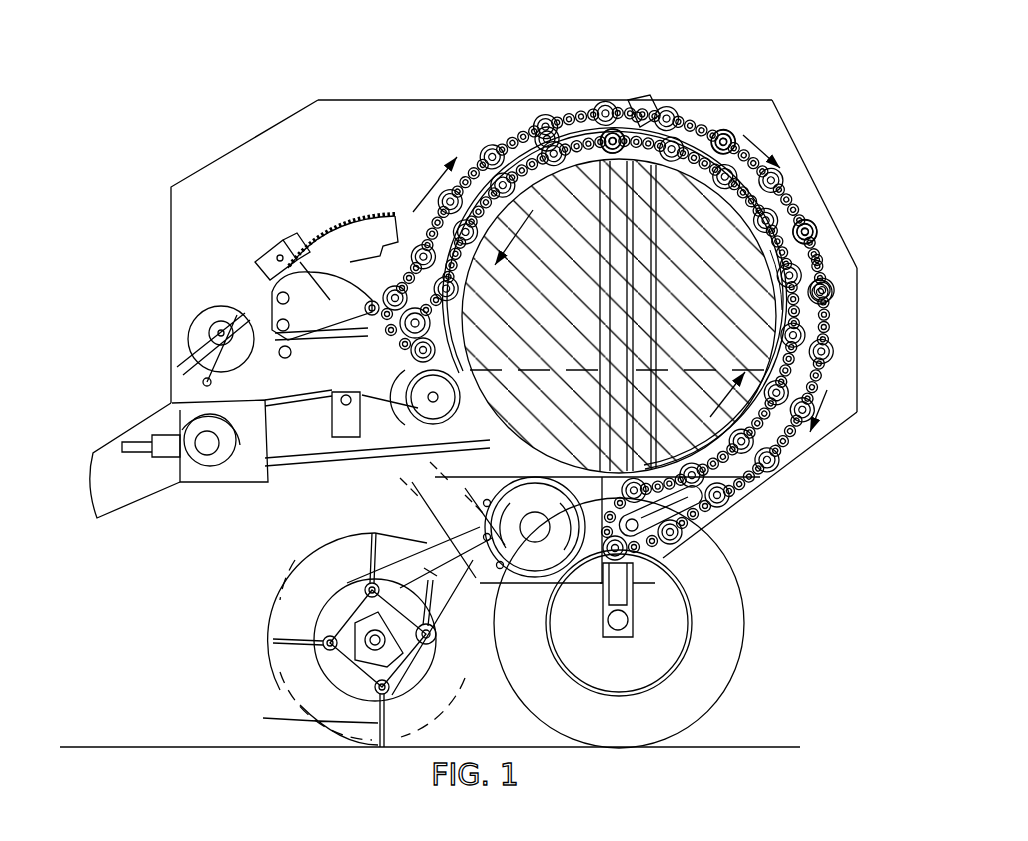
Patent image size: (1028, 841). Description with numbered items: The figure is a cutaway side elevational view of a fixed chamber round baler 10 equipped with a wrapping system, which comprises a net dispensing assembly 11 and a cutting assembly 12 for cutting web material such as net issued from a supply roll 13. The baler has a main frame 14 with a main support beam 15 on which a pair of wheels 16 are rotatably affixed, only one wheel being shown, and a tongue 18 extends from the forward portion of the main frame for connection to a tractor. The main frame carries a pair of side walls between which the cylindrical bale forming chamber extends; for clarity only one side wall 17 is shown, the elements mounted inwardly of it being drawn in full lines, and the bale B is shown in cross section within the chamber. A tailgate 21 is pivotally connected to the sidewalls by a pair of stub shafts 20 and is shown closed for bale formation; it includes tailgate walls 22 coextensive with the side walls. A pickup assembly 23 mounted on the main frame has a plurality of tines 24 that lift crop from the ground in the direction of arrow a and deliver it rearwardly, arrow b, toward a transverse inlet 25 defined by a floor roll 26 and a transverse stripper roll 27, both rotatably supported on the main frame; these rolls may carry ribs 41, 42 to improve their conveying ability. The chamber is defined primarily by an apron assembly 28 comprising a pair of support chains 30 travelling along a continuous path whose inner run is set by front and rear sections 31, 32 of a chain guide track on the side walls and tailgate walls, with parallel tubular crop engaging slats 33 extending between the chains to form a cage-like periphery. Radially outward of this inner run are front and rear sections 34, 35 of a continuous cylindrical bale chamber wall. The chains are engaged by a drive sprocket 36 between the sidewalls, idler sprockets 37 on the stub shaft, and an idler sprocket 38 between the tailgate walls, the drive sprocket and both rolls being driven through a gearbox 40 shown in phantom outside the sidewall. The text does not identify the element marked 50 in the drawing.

The round baler 10 is at (918, 86).
The net dispensing assembly 11 is at (262, 222).
The cutting assembly 12 is at (322, 420).
The supply roll 13 is at (215, 318).
The main frame 14 is at (385, 98).
The main support beam 15 is at (655, 583).
The wheels 16 is at (740, 650).
The side wall 17 is at (258, 152).
The tongue 18 is at (118, 492).
The stub shafts 20 is at (637, 98).
The tailgate 21 is at (835, 212).
The tailgate walls 22 is at (842, 397).
The pickup assembly 23 is at (257, 625).
The tines 24 is at (300, 711).
The transverse inlet 25 is at (402, 448).
The floor roll 26 is at (528, 580).
The stripper roll 27 is at (408, 410).
The apron assembly 28 is at (787, 187).
The support chains 30 is at (817, 260).
The front section of chain guide track 31 is at (492, 158).
The rear section of chain guide track 32 is at (772, 250).
The crop engaging slats 33 is at (556, 123).
The front section of bale chamber wall 34 is at (600, 123).
The rear section of bale chamber wall 35 is at (700, 130).
The drive sprocket 36 is at (340, 190).
The idler sprockets 37 is at (603, 116).
The idler sprocket 38 is at (683, 519).
The gearbox 40 is at (210, 462).
The ribs 41 is at (560, 578).
The ribs 42 is at (420, 395).
The knotter 50 is at (262, 252).
The bale B is at (825, 318).
The direction arrow a is at (247, 640).
The direction arrow b is at (343, 515).